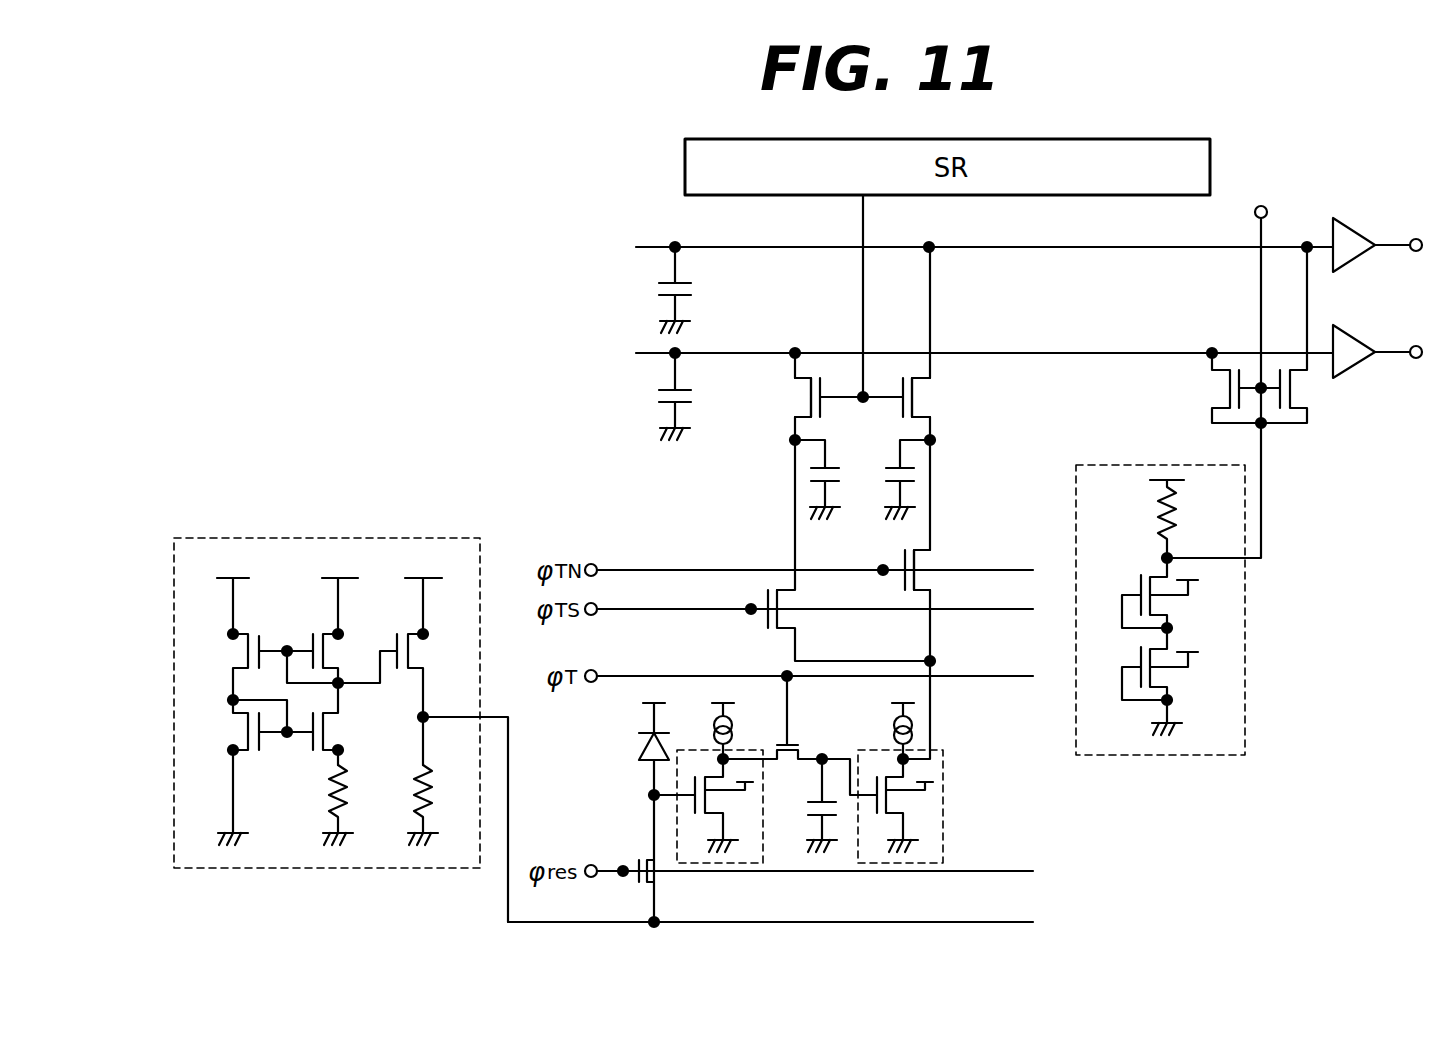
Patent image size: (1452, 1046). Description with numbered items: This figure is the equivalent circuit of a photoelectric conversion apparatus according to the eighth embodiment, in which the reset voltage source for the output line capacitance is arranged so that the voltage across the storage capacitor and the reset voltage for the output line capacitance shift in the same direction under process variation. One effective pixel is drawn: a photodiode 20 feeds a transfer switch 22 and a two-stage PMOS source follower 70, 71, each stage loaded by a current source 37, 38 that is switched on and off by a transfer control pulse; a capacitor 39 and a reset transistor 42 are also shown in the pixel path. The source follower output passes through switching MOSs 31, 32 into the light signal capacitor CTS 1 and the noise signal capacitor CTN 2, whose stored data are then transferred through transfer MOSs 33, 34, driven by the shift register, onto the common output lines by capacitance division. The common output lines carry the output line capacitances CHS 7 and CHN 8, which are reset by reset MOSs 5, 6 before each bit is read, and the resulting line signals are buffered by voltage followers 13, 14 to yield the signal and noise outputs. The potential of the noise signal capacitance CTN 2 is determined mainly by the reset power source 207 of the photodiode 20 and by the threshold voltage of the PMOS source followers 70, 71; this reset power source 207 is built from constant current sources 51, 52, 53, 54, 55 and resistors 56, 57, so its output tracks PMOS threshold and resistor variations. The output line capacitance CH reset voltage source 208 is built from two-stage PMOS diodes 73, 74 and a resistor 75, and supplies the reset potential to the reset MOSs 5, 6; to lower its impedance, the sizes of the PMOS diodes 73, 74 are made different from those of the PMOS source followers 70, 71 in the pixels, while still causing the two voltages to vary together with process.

The light signal capacitor CTS 1 is at (830, 467).
The noise signal capacitor CTN 2 is at (913, 471).
The reset MOS 5 is at (1205, 418).
The reset MOS 6 is at (1300, 410).
The output line capacitance CHS 7 is at (697, 397).
The output line capacitance CHN 8 is at (697, 290).
The voltage follower 13 is at (1357, 222).
The voltage follower 14 is at (1360, 378).
The photodiode 20 is at (640, 750).
The transfer switch 22 is at (802, 754).
The switching MOS 31 is at (788, 604).
The switching MOS 32 is at (928, 566).
The transfer MOS 33 is at (800, 410).
The transfer MOS 34 is at (919, 392).
The current source 37 is at (733, 729).
The current source 38 is at (895, 730).
The capacitor 39 is at (838, 808).
The reset transistor 42 is at (658, 878).
The constant current source 51 is at (230, 650).
The constant current source 52 is at (230, 728).
The constant current source 53 is at (318, 633).
The constant current source 54 is at (305, 742).
The constant current source 55 is at (406, 633).
The resistor 56 is at (348, 792).
The resistor 57 is at (430, 792).
The PMOS source follower 70 is at (755, 814).
The PMOS source follower 71 is at (902, 803).
The PMOS diode 73 is at (1178, 678).
The PMOS diode 74 is at (1170, 604).
The resistor 75 is at (1178, 503).
The reset power source 207 is at (394, 538).
The output line capacitance CH reset voltage source 208 is at (1249, 682).